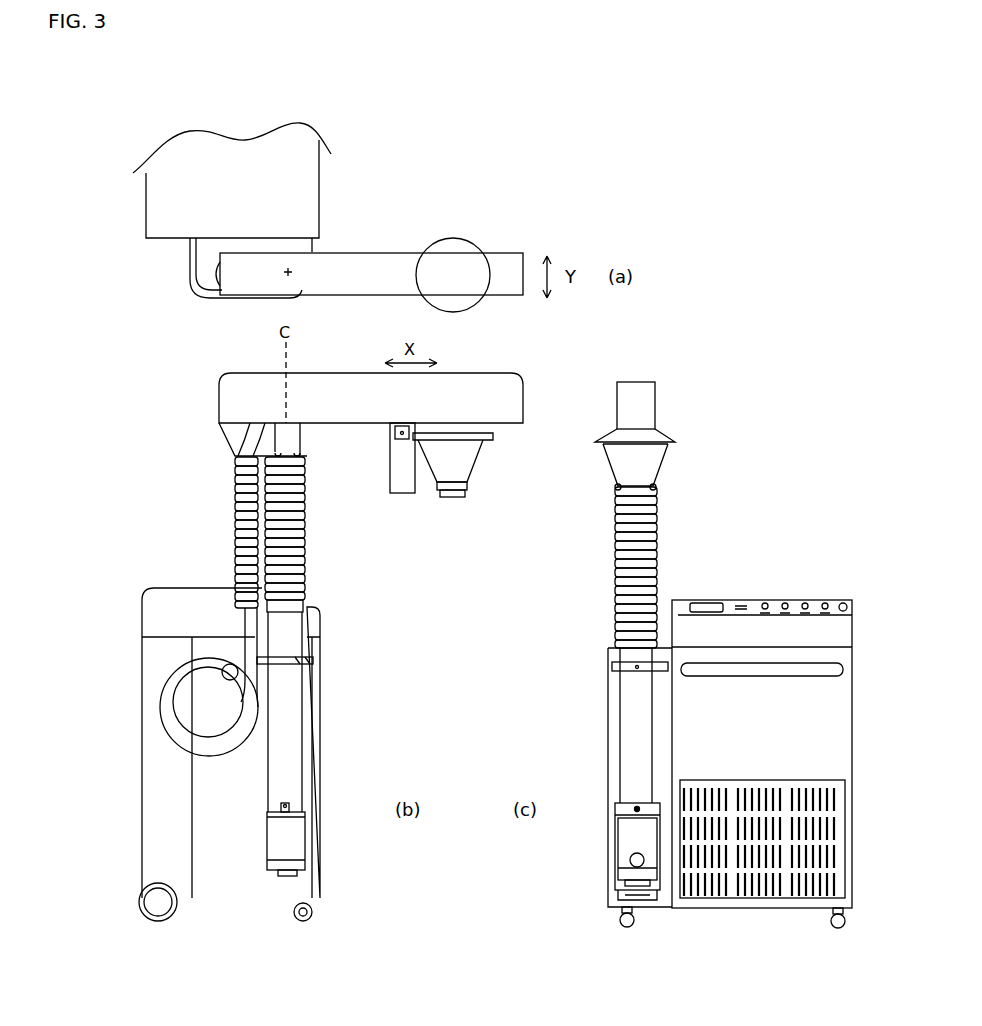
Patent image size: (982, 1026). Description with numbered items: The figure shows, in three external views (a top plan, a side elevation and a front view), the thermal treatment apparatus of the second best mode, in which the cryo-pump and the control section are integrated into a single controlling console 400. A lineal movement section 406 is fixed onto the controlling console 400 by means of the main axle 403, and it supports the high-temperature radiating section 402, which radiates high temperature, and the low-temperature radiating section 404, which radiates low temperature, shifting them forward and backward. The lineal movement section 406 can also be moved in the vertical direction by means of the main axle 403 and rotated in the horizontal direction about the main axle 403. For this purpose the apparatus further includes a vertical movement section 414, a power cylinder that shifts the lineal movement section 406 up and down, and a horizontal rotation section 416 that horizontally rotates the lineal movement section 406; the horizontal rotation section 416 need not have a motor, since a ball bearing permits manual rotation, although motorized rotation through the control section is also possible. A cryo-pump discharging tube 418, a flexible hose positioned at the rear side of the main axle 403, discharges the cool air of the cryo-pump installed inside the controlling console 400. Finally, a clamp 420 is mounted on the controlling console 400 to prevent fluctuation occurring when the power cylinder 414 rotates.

The controlling console 400 is at (154, 219).
The high-temperature radiating section 402 is at (458, 244).
The main axle 403 is at (305, 535).
The low-temperature radiating section 404 is at (404, 490).
The lineal movement section 406 is at (354, 261).
The vertical movement section 414 is at (300, 736).
The horizontal rotation section 416 is at (297, 848).
The cryo-pump discharging tube 418 is at (164, 709).
The clamp 420 is at (313, 661).